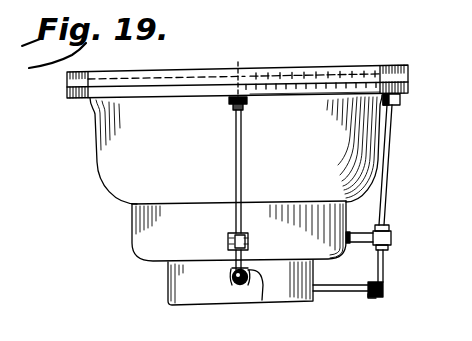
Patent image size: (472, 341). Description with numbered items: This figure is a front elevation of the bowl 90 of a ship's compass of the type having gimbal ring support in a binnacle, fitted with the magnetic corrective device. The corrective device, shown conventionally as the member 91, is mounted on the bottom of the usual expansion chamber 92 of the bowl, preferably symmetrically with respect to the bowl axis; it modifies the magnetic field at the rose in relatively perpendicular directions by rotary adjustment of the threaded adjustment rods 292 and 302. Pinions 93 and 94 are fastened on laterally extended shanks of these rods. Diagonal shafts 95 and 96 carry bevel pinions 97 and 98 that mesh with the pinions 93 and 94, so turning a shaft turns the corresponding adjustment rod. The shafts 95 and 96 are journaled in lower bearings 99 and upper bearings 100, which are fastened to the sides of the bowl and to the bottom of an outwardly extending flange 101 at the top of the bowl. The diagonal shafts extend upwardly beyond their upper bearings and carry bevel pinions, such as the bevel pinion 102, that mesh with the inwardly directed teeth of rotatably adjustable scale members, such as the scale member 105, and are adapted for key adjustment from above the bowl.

The rotatably adjustable scale member 105 is at (409, 64).
The bevel pinion 102 is at (238, 62).
The outwardly extending flange 101 is at (291, 100).
The lower bearing 99 is at (232, 107).
The diagonal shaft 95 is at (235, 162).
The bowl 90 is at (236, 149).
The diagonal shaft 96 is at (392, 168).
The upper bearing 100 is at (230, 242).
The expansion chamber 92 is at (239, 231).
The magnetic correcting device 91 is at (240, 282).
The bevel pinion 98 is at (383, 286).
The pinion 94 is at (374, 297).
The threaded adjustment rod 302 is at (334, 292).
The threaded adjustment rod 292 is at (237, 286).
The pinion 93 is at (233, 280).
The bevel pinion 97 is at (262, 300).